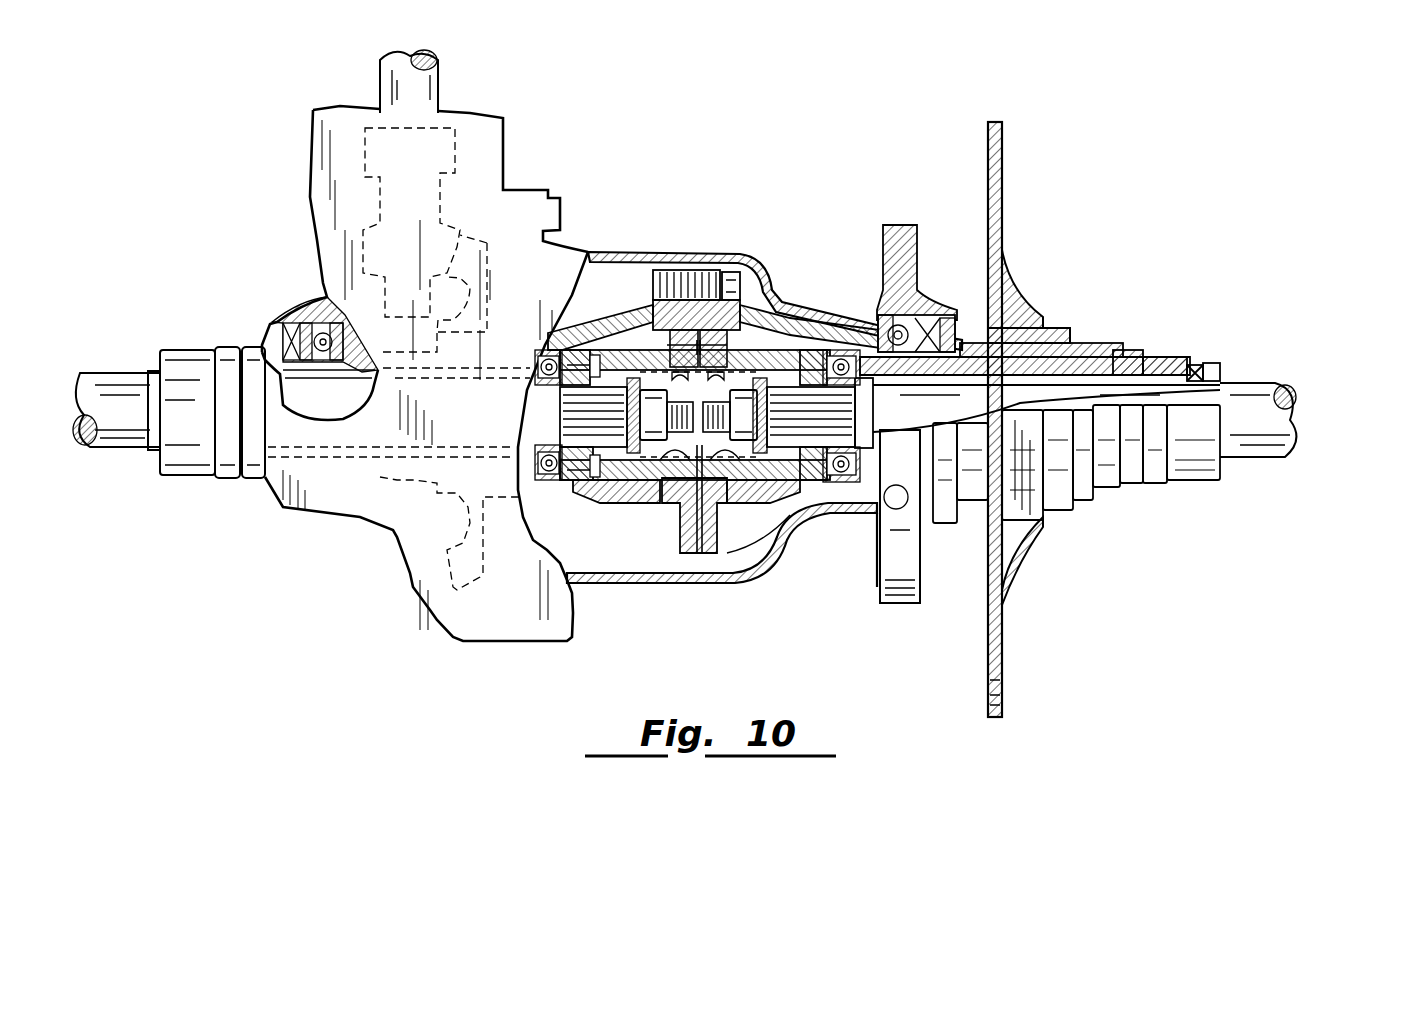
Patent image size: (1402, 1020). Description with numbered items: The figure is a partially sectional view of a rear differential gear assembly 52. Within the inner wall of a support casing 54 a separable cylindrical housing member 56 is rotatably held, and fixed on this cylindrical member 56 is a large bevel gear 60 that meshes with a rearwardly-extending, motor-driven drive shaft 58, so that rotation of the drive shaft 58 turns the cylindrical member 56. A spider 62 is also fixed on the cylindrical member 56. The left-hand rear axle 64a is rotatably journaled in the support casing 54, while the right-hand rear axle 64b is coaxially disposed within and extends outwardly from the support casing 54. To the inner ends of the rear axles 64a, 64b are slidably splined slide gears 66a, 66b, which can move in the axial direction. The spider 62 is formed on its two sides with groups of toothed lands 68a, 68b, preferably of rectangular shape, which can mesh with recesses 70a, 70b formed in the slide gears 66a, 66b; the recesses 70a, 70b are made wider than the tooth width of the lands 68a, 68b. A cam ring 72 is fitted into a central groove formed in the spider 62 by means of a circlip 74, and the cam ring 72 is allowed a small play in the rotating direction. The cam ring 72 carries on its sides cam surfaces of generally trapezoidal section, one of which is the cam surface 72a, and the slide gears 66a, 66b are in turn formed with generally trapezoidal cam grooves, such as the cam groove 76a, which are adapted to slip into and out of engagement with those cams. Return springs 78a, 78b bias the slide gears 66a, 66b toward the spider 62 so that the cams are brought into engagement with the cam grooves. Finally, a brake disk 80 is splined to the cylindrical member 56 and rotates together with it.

The differential gear assembly 52 is at (632, 210).
The support casing 54 is at (633, 252).
The cylindrical housing member 56 is at (619, 322).
The drive shaft 58 is at (440, 88).
The large bevel gear 60 is at (490, 248).
The spider 62 is at (700, 268).
The left-hand rear axle 64a is at (115, 378).
The right-hand rear axle 64b is at (805, 412).
The slide gear 66a is at (628, 485).
The slide gear 66b is at (755, 490).
The toothed lands 68a is at (705, 266).
The recesses 70a is at (668, 330).
The toothed lands 68b is at (828, 279).
The recesses 70b is at (740, 335).
The cam ring 72 is at (714, 490).
The cam surface 72a is at (675, 495).
The cam groove 76a is at (682, 448).
The circlip 74 is at (699, 490).
The return spring 78a is at (622, 465).
The return spring 78b is at (795, 482).
The brake disk 80 is at (1003, 200).